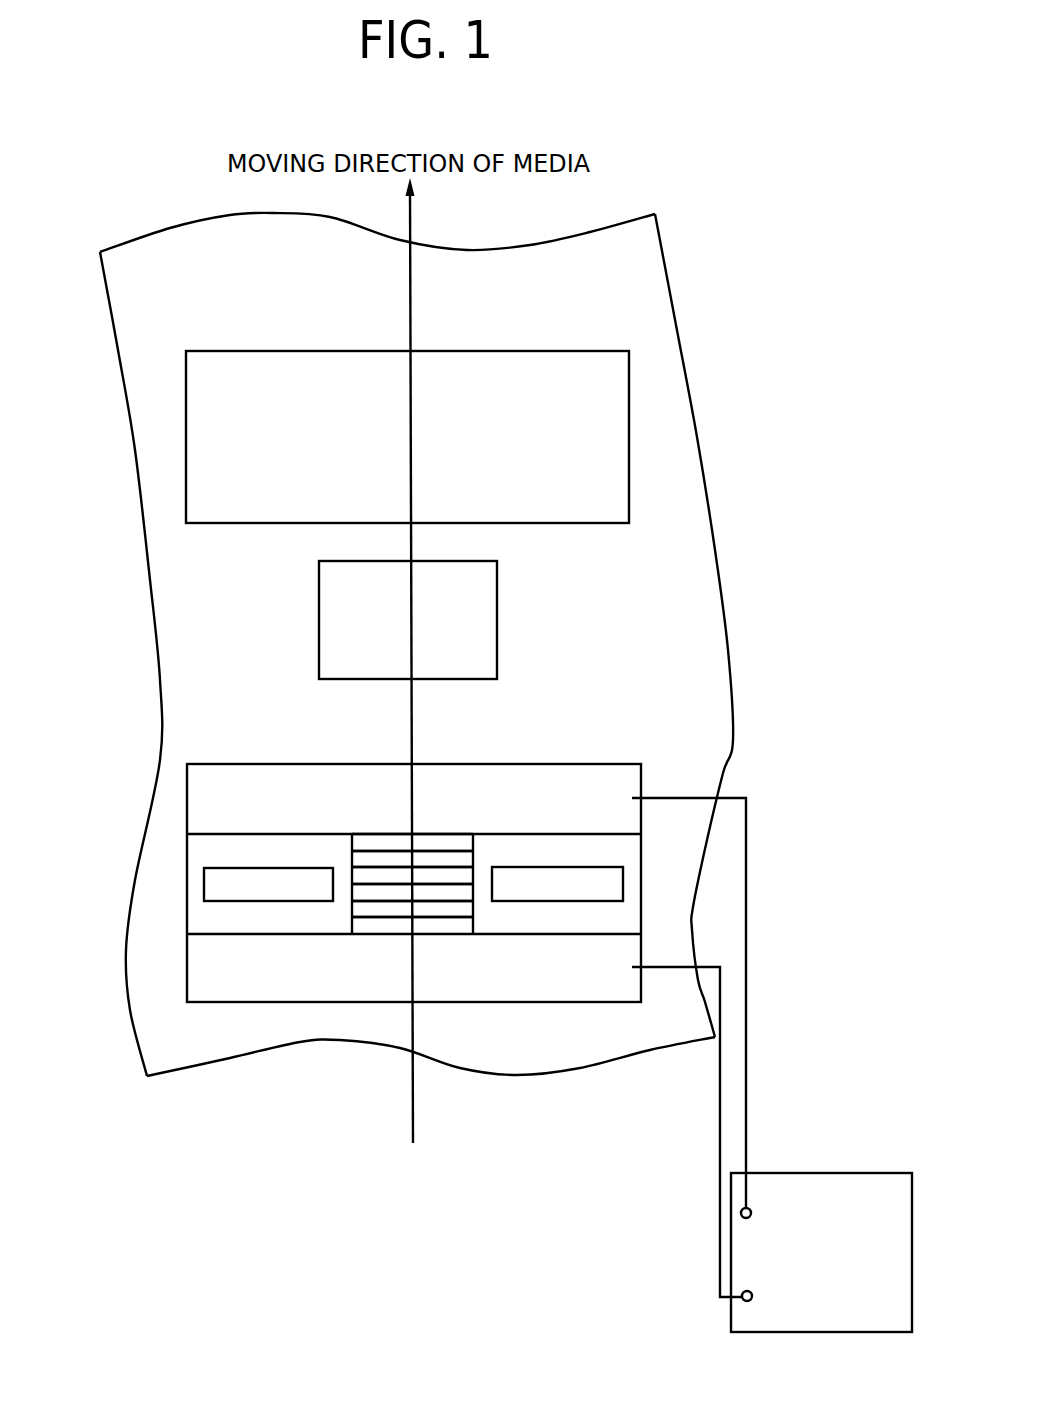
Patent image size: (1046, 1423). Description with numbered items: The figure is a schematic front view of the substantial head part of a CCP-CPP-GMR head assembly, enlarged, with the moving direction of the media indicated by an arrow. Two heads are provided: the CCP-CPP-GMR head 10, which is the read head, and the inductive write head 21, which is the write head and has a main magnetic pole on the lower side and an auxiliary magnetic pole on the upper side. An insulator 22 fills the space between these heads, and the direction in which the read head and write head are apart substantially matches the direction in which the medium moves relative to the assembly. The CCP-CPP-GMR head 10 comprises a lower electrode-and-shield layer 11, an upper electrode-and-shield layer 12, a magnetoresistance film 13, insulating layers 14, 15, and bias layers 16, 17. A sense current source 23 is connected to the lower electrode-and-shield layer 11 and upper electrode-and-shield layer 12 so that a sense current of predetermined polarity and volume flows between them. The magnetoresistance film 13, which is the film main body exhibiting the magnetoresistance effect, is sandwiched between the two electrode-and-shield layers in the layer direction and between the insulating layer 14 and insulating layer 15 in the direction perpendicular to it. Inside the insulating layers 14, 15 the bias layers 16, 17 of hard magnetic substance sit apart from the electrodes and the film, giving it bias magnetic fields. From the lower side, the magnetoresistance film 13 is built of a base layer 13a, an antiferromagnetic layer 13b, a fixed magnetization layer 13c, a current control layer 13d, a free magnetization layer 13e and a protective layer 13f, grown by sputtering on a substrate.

The CCP-CPP-GMR head 10 is at (673, 778).
The lower electrode-and-shield layer 11 is at (200, 988).
The upper electrode-and-shield layer 12 is at (203, 798).
The magnetoresistance film 13 is at (372, 950).
The base layer 13a is at (373, 927).
The antiferromagnetic layer 13b is at (373, 910).
The fixed magnetization layer 13c is at (373, 893).
The current control layer 13d is at (373, 877).
The free magnetization layer 13e is at (373, 860).
The protective layer 13f is at (373, 842).
The insulating layer 14 is at (202, 856).
The insulating layer 15 is at (623, 855).
The bias layer 16 is at (210, 878).
The bias layer 17 is at (615, 882).
The inductive write head 21 is at (497, 595).
The insulator 22 is at (616, 696).
The sense current source 23 is at (786, 1173).